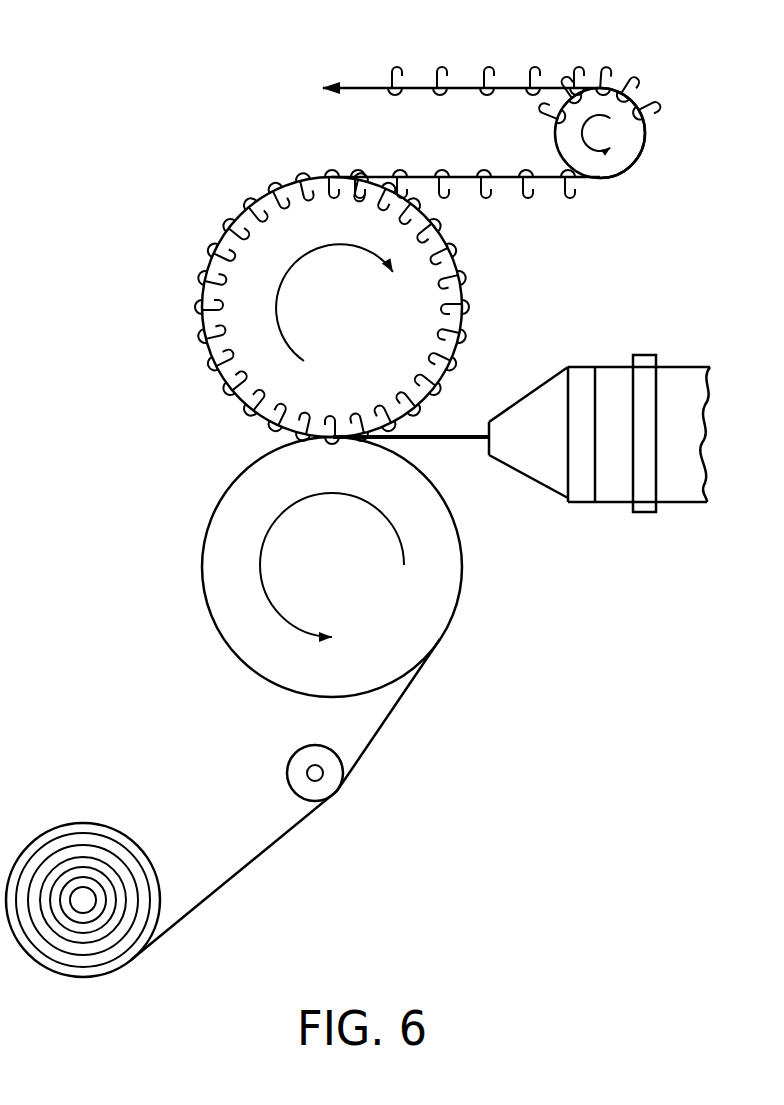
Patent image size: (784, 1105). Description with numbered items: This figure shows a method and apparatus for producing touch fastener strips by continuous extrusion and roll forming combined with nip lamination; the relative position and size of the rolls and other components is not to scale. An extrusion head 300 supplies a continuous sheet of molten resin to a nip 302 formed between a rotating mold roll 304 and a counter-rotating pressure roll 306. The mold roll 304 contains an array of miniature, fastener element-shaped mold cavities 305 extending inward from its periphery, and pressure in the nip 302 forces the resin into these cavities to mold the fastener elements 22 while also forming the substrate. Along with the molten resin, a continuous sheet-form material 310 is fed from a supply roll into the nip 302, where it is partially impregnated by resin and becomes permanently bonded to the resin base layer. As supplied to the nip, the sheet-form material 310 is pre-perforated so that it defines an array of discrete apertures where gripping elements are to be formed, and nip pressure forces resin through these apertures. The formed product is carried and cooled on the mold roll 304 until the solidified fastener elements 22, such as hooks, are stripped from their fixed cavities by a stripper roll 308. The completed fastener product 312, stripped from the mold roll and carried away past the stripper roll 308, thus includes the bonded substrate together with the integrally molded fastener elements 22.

The completed fastener product 312 is at (367, 85).
The stripper roll 308 is at (645, 117).
The fastener elements 22 is at (657, 170).
The mold roll 304 is at (407, 323).
The mold cavities 305 is at (447, 340).
The extrusion head 300 is at (657, 362).
The nip 302 is at (367, 440).
The pressure roll 306 is at (405, 603).
The sheet-form material 310 is at (247, 863).